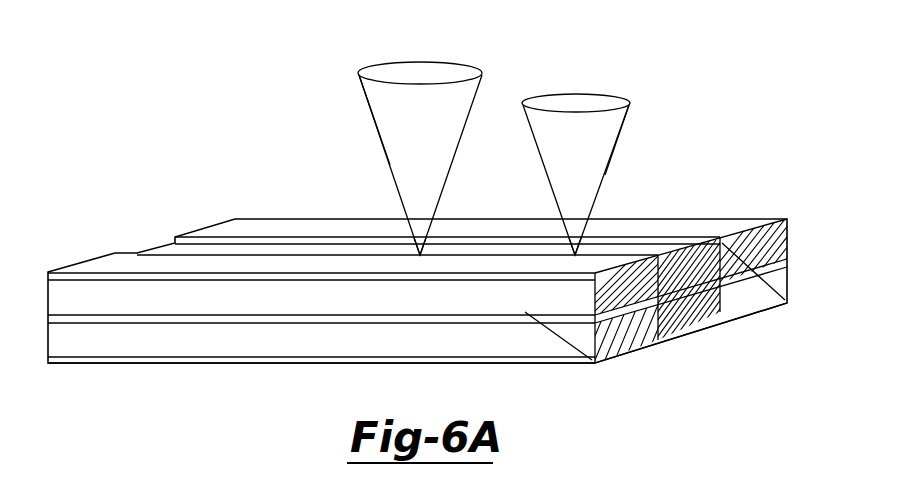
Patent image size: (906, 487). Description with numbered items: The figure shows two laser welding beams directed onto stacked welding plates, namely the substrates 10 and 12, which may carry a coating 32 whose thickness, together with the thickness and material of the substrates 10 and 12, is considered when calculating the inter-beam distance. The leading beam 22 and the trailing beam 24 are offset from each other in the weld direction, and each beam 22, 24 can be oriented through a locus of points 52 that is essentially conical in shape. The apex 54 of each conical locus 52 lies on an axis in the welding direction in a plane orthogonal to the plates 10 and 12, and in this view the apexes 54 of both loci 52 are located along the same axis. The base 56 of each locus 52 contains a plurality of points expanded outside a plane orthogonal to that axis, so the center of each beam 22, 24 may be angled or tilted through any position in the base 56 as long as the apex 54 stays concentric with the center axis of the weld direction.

The substrate 10 is at (757, 221).
The substrate 12 is at (751, 322).
The leading beam 22 is at (608, 169).
The trailing beam 24 is at (457, 169).
The coating 32 is at (592, 275).
The locus of points 52 is at (367, 87).
The apex 54 is at (428, 250).
The base 56 is at (421, 72).